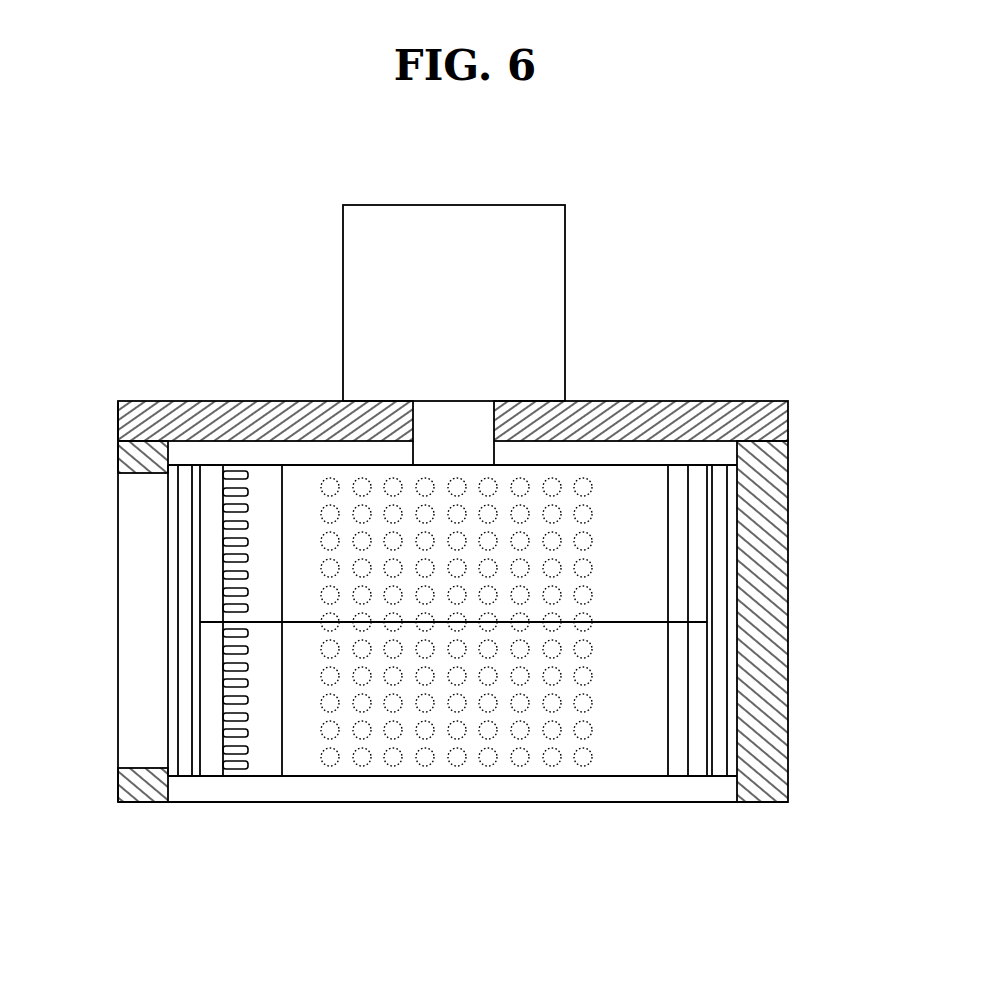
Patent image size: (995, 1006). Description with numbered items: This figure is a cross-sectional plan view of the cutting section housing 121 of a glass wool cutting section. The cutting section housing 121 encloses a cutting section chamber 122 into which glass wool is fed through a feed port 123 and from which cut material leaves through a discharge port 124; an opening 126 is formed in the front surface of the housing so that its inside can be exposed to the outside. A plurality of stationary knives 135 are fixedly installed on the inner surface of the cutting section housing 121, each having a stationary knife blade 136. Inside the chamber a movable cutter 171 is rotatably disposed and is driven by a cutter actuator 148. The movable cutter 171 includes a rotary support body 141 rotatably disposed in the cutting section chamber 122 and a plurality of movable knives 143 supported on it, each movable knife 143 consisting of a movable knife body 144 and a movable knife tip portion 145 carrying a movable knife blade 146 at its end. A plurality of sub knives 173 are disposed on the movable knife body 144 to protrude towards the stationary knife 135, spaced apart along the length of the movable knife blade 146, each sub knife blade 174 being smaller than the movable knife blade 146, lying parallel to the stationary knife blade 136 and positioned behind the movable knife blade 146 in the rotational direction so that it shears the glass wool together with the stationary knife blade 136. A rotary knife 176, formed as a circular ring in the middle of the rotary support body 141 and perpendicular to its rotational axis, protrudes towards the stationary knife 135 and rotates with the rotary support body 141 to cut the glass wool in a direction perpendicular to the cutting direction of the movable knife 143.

The cutting section housing 121 is at (790, 481).
The cutting section chamber 122 is at (660, 457).
The feed port 123 is at (135, 545).
The discharge port 124 is at (557, 470).
The opening 126 is at (177, 803).
The stationary knife 135 is at (174, 468).
The stationary knife blade 136 is at (205, 470).
The rotary support body 141 is at (628, 772).
The movable knife 143 is at (250, 783).
The movable knife body 144 is at (270, 757).
The movable knife tip portion 145 is at (210, 762).
The movable knife blade 146 is at (193, 758).
The cutter actuator 148 is at (543, 272).
The movable cutter 171 is at (516, 781).
The sub knife 173 is at (238, 473).
The sub knife blade 174 is at (217, 475).
The rotary knife 176 is at (645, 622).